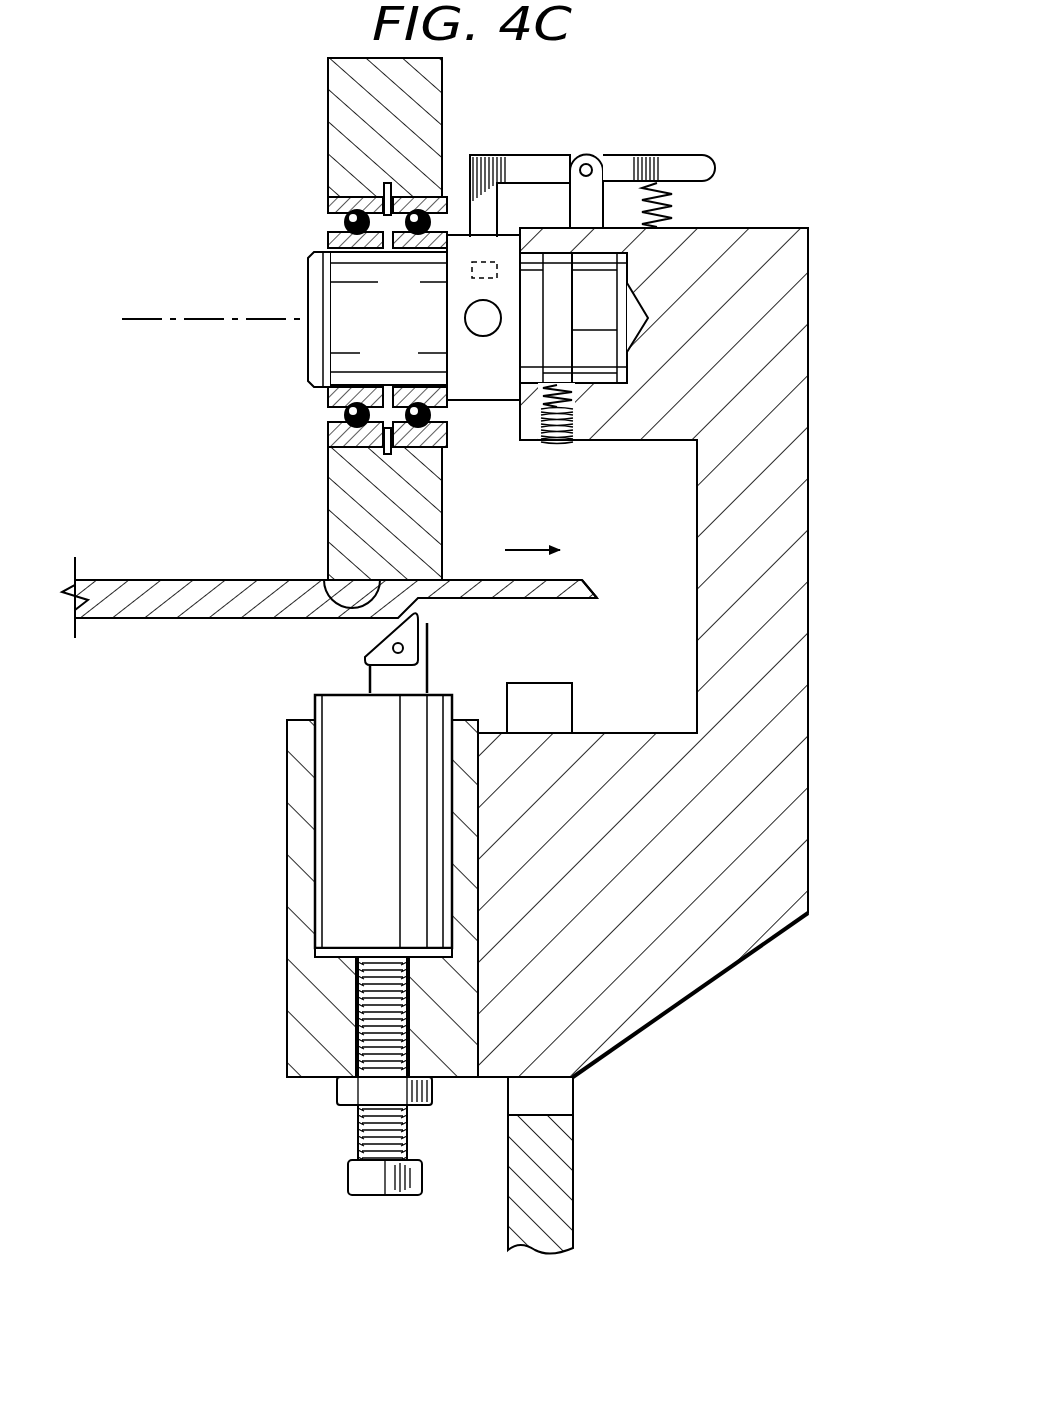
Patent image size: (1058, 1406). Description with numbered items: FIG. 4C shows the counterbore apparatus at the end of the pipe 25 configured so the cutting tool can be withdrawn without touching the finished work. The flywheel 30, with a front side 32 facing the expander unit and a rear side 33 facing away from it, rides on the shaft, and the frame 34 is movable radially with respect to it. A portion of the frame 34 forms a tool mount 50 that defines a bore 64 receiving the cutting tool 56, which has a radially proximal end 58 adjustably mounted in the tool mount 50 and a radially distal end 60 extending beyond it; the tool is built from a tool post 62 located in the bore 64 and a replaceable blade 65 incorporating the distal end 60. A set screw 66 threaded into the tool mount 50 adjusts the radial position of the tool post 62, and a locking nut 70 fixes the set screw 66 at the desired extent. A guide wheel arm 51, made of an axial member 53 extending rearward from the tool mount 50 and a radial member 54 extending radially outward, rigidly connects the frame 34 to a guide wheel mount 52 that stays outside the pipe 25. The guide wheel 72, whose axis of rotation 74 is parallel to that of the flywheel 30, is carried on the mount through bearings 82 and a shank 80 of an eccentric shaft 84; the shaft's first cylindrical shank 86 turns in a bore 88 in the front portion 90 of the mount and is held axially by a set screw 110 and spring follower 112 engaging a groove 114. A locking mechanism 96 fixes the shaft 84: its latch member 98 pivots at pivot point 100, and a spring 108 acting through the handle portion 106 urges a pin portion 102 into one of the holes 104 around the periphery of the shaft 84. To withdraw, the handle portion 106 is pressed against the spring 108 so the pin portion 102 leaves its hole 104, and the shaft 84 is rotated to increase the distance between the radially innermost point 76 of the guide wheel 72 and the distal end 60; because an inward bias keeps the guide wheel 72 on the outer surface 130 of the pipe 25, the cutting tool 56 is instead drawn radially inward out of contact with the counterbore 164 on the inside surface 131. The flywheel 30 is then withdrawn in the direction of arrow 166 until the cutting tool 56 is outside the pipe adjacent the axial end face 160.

The pipe 25 is at (366, 592).
The flywheel 30 is at (545, 1172).
The front side 32 is at (507, 1215).
The rear side 33 is at (575, 1180).
The frame 34 is at (325, 901).
The tool mount 50 is at (288, 935).
The guide wheel arm 51 is at (842, 532).
The guide wheel mount 52 is at (800, 228).
The axial member 53 is at (630, 732).
The radial member 54 is at (696, 655).
The cutting tool 56 is at (442, 660).
The radially proximal end 58 is at (330, 957).
The radially distal end 60 is at (412, 632).
The tool post 62 is at (315, 700).
The bore 64 is at (313, 793).
The replaceable blade 65 is at (372, 682).
The set screw 66 is at (358, 1130).
The locking nut 70 is at (337, 1095).
The guide wheel 72 is at (328, 498).
The axis of rotation 74 is at (140, 319).
The radially innermost point 76 is at (335, 590).
The shank 80 is at (307, 350).
The bearings 82 is at (318, 213).
The eccentric shaft 84 is at (403, 366).
The first cylindrical shank 86 is at (630, 283).
The bore 88 is at (600, 372).
The front portion 90 is at (538, 448).
The locking mechanism 96 is at (665, 137).
The latch member 98 is at (488, 158).
The pivot point 100 is at (583, 157).
The pin portion 102 is at (538, 175).
The holes 104 is at (470, 278).
The handle portion 106 is at (690, 155).
The spring 108 is at (668, 212).
The set screw 110 is at (562, 445).
The spring follower 112 is at (590, 368).
The groove 114 is at (556, 245).
The outer surface 130 is at (148, 580).
The inside surface 131 is at (145, 620).
The axial end face 160 is at (595, 594).
The counterbore 164 is at (557, 600).
The arrow 166 is at (566, 528).